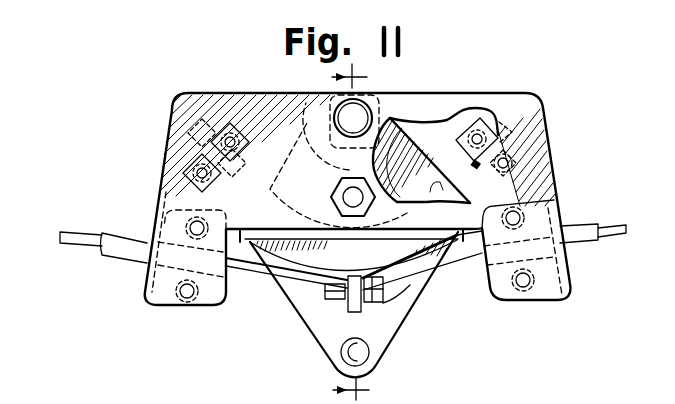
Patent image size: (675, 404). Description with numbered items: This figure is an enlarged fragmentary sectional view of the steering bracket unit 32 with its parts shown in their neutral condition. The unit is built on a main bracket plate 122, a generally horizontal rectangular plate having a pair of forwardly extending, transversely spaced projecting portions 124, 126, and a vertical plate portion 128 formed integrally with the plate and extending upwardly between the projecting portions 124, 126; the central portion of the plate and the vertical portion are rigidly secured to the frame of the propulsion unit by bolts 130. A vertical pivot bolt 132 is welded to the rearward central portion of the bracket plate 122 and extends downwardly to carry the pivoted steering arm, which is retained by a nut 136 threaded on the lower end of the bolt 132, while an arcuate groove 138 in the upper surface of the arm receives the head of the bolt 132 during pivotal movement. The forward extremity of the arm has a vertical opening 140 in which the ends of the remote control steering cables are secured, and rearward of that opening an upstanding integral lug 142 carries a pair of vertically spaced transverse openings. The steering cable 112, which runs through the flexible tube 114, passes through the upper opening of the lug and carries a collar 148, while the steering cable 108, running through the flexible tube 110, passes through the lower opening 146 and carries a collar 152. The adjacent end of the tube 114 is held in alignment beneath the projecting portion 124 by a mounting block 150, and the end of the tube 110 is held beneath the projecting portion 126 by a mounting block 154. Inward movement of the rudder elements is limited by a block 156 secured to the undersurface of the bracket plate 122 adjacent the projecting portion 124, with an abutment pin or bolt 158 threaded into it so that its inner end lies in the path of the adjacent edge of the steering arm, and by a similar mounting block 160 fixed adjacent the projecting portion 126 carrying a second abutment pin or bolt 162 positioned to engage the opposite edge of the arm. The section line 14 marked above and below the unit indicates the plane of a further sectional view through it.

The section line 14- 14 is at (364, 232).
The steering bracket unit 32 is at (311, 341).
The steering cord or cable 108 is at (613, 236).
The outer flexible tube 110 is at (583, 250).
The second steering cable 112 is at (73, 239).
The flexible tube 114 is at (133, 261).
The main bracket plate 122 is at (461, 97).
The projecting portion 124 is at (198, 306).
The projecting portion 126 is at (533, 288).
The vertical plate portion 128 is at (377, 235).
The bolts 130 is at (336, 193).
The vertical pivot bolt 132 is at (345, 108).
The nut 136 is at (392, 92).
The arcuate groove 138 is at (468, 204).
The vertical opening 140 is at (369, 352).
The upstanding integral lug 142 is at (350, 306).
The lower opening 146 is at (413, 285).
The collar 148 is at (403, 293).
The mounting block 150 is at (173, 223).
The collar 152 is at (323, 294).
The mounting block 154 is at (556, 199).
The block 156 is at (204, 104).
The abutment pin or bolt 158 is at (175, 123).
The mounting block 160 is at (497, 127).
The abutment pin or bolt 162 is at (477, 167).